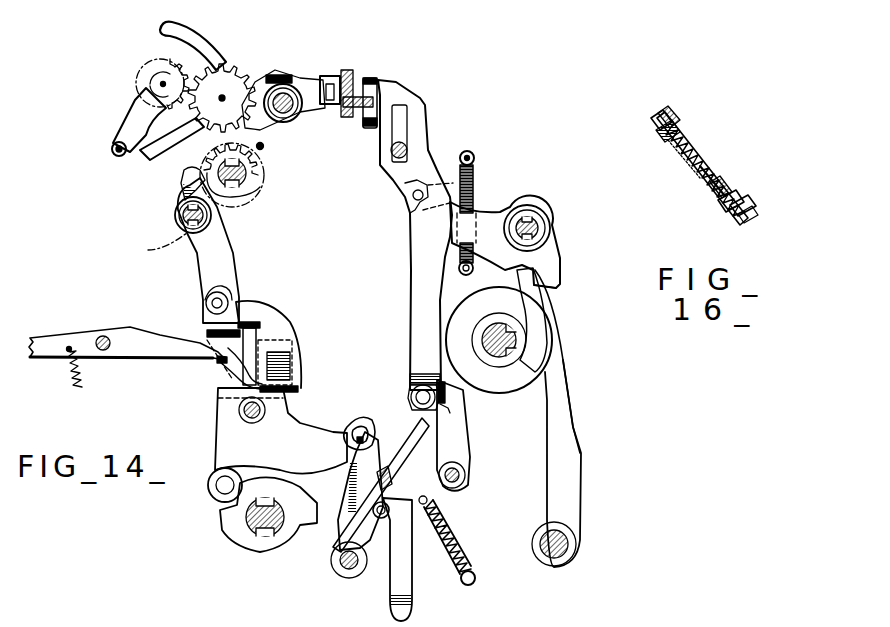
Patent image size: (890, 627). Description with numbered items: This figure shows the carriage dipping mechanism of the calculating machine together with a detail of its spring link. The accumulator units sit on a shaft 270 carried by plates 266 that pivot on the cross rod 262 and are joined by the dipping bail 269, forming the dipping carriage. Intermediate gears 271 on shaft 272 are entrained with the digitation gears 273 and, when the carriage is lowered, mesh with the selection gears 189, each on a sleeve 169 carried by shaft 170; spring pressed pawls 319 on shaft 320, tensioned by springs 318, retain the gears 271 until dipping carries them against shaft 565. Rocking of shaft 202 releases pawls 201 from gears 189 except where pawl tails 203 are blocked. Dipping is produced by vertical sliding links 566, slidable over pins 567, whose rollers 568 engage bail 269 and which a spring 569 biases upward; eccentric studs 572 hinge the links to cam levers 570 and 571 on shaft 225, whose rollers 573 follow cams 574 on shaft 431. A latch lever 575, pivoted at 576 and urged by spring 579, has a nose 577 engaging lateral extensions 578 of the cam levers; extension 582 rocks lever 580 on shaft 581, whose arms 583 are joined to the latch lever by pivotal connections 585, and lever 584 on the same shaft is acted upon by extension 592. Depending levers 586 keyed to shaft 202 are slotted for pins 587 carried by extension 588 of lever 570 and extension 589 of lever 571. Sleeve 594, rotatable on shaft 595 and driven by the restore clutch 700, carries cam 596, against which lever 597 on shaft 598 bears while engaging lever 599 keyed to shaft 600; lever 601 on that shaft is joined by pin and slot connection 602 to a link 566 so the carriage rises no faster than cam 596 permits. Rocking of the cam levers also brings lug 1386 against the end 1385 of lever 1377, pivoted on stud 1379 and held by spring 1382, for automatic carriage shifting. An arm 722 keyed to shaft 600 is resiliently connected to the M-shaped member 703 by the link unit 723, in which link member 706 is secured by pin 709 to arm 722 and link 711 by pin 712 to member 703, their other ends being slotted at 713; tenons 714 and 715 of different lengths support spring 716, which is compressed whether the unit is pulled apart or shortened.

In FIG. 14, the shaft 270 is at (163, 84).
In FIG. 14, the digitation gears 273 is at (158, 82).
In FIG. 14, the plates 266 is at (128, 112).
In FIG. 14, the cross rod 262 is at (115, 154).
In FIG. 14, the intermediate gears 271 is at (198, 122).
In FIG. 14, the shaft 272 is at (222, 98).
In FIG. 14, the pawls 201 is at (182, 195).
In FIG. 14, the shaft 202 is at (182, 217).
In FIG. 14, the pawl tails 203 is at (152, 249).
In FIG. 14, the spring pressed pawls 319 is at (264, 76).
In FIG. 14, the springs 318 is at (282, 78).
In FIG. 14, the shaft 320 is at (328, 86).
In FIG. 14, the dipping bail 269 is at (348, 70).
In FIG. 14, the rollers 568 is at (377, 80).
In FIG. 14, the pins 567 is at (403, 150).
In FIG. 14, the shaft 565 is at (262, 146).
In FIG. 14, the selection gears 189 is at (254, 160).
In FIG. 14, the shaft 170 is at (234, 173).
In FIG. 14, the sleeve 169 is at (252, 186).
In FIG. 14, the pin and slot connection 602 is at (410, 190).
In FIG. 14, the spring 569 is at (476, 174).
In FIG. 14, the lever 601 is at (492, 214).
In FIG. 14, the shaft 600 is at (550, 226).
In FIG. 14, the lever 599 is at (548, 260).
In FIG. 14, the vertical sliding links 566 is at (411, 264).
In FIG. 14, the depending levers 586 is at (237, 257).
In FIG. 14, the pins 587 is at (203, 302).
In FIG. 14, the lug 1386 is at (258, 322).
In FIG. 14, the extension 589 is at (282, 322).
In FIG. 14, the end of lever 1385 is at (283, 353).
In FIG. 14, the stud 1379 is at (100, 338).
In FIG. 14, the spring 1382 is at (72, 384).
In FIG. 14, the lever 1377 is at (128, 348).
In FIG. 14, the extension 588 is at (218, 374).
In FIG. 14, the cam lever 571 is at (218, 398).
In FIG. 14, the shaft 225 is at (239, 412).
In FIG. 14, the cam lever 570 is at (216, 432).
In FIG. 14, the rollers 573 is at (208, 488).
In FIG. 14, the shaft 431 is at (248, 520).
In FIG. 14, the cams 574 is at (250, 552).
In FIG. 14, the lateral extensions 578 is at (416, 388).
In FIG. 14, the eccentric studs 572 is at (436, 394).
In FIG. 14, the extension 592 is at (374, 420).
In FIG. 14, the lever 584 is at (358, 424).
In FIG. 14, the sleeve 594 is at (508, 333).
In FIG. 14, the shaft 595 is at (506, 340).
In FIG. 14, the cam 596 is at (540, 368).
In FIG. 14, the restore clutch 700 is at (566, 412).
In FIG. 14, the nose 577 is at (448, 412).
In FIG. 14, the latch lever 575 is at (468, 440).
In FIG. 14, the lever 597 is at (568, 452).
In FIG. 14, the pivot 576 is at (459, 477).
In FIG. 14, the extension 582 is at (390, 476).
In FIG. 14, the spring 579 is at (458, 536).
In FIG. 14, the pivotal connections 585 is at (386, 518).
In FIG. 14, the lever 580 is at (360, 497).
In FIG. 14, the shaft 581 is at (340, 566).
In FIG. 14, the arms 583 is at (388, 555).
In FIG. 14, the shaft 598 is at (568, 546).
In FIG. 16, the M-shaped member 703 is at (672, 112).
In FIG. 16, the slots 713 is at (654, 118).
In FIG. 16, the link 711 is at (684, 140).
In FIG. 16, the pin 712 is at (662, 138).
In FIG. 16, the link unit 723 is at (694, 160).
In FIG. 16, the spring 716 is at (688, 172).
In FIG. 16, the tenon 715 is at (712, 188).
In FIG. 16, the tenon 714 is at (708, 192).
In FIG. 16, the pin 709 is at (724, 210).
In FIG. 16, the arm 722 is at (744, 210).
In FIG. 16, the first link member 706 is at (736, 220).